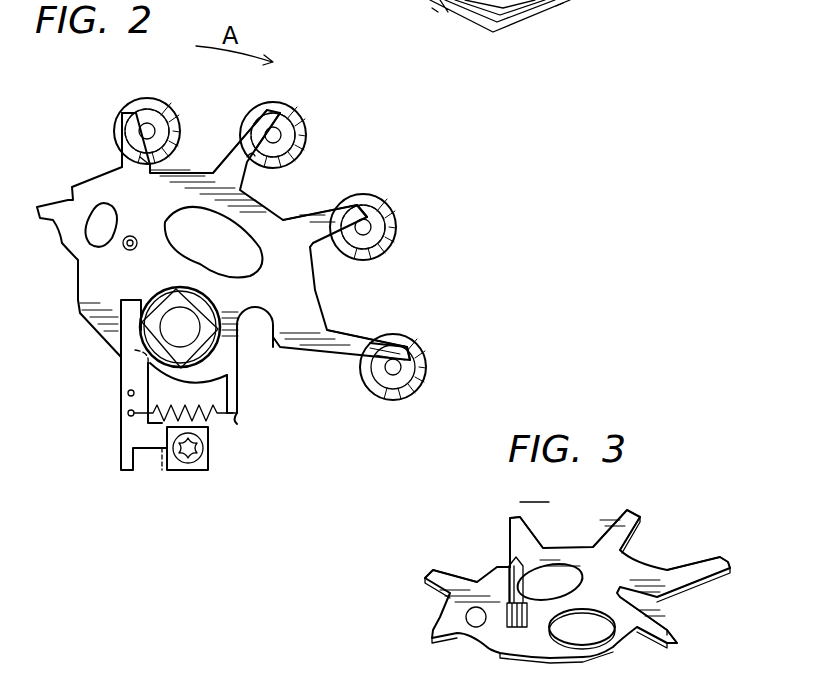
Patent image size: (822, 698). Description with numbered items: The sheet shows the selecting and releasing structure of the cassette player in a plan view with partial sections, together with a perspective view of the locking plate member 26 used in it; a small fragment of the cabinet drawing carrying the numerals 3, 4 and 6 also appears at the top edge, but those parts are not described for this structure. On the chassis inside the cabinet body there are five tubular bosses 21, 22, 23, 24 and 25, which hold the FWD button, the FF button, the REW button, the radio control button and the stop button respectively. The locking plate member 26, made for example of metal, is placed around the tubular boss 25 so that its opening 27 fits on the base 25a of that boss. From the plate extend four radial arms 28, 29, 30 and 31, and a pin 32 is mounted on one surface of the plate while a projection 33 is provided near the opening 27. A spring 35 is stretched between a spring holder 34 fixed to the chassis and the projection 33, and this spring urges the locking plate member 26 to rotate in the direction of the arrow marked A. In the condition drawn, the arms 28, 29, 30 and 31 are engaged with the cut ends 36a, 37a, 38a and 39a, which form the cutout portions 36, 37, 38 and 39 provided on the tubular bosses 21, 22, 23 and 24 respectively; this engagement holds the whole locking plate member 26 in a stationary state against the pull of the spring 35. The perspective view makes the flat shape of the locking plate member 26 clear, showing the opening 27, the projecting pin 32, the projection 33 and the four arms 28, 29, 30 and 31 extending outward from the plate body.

In FIG. 2, the housing 3 is at (512, 20).
In FIG. 2, the cover 4 is at (440, 10).
In FIG. 2, the base 6 is at (560, 6).
In FIG. 2, the tubular boss 21 is at (165, 113).
In FIG. 2, the tubular boss 22 is at (296, 150).
In FIG. 2, the tubular boss 23 is at (380, 257).
In FIG. 2, the tubular boss 24 is at (365, 390).
In FIG. 2, the tubular boss 25 is at (242, 347).
In FIG. 2, the base of the tubular boss 25a is at (232, 374).
In FIG. 2, the locking plate member 26 is at (68, 303).
In FIG. 3, the locking plate member 26 is at (577, 569).
In FIG. 2, the opening 27 is at (205, 300).
In FIG. 3, the opening 27 is at (572, 633).
In FIG. 2, the arm 28 is at (122, 148).
In FIG. 3, the arm 28 is at (437, 571).
In FIG. 2, the arm 29 is at (240, 152).
In FIG. 3, the arm 29 is at (510, 537).
In FIG. 2, the arm 30 is at (316, 216).
In FIG. 3, the arm 30 is at (618, 523).
In FIG. 2, the arm 31 is at (364, 344).
In FIG. 3, the arm 31 is at (698, 562).
In FIG. 2, the pin 32 is at (128, 252).
In FIG. 3, the pin 32 is at (524, 582).
In FIG. 2, the projection 33 is at (240, 398).
In FIG. 3, the projection 33 is at (660, 615).
In FIG. 2, the spring holder 34 is at (124, 384).
In FIG. 2, the spring 35 is at (214, 416).
In FIG. 2, the cutout portion 36 is at (118, 128).
In FIG. 2, the cut end 36a is at (142, 168).
In FIG. 2, the cutout portion 37 is at (250, 110).
In FIG. 2, the cut end 37a is at (252, 165).
In FIG. 2, the cutout portion 38 is at (346, 202).
In FIG. 2, the cut end 38a is at (340, 252).
In FIG. 2, the cutout portion 39 is at (403, 334).
In FIG. 2, the cut end 39a is at (368, 358).